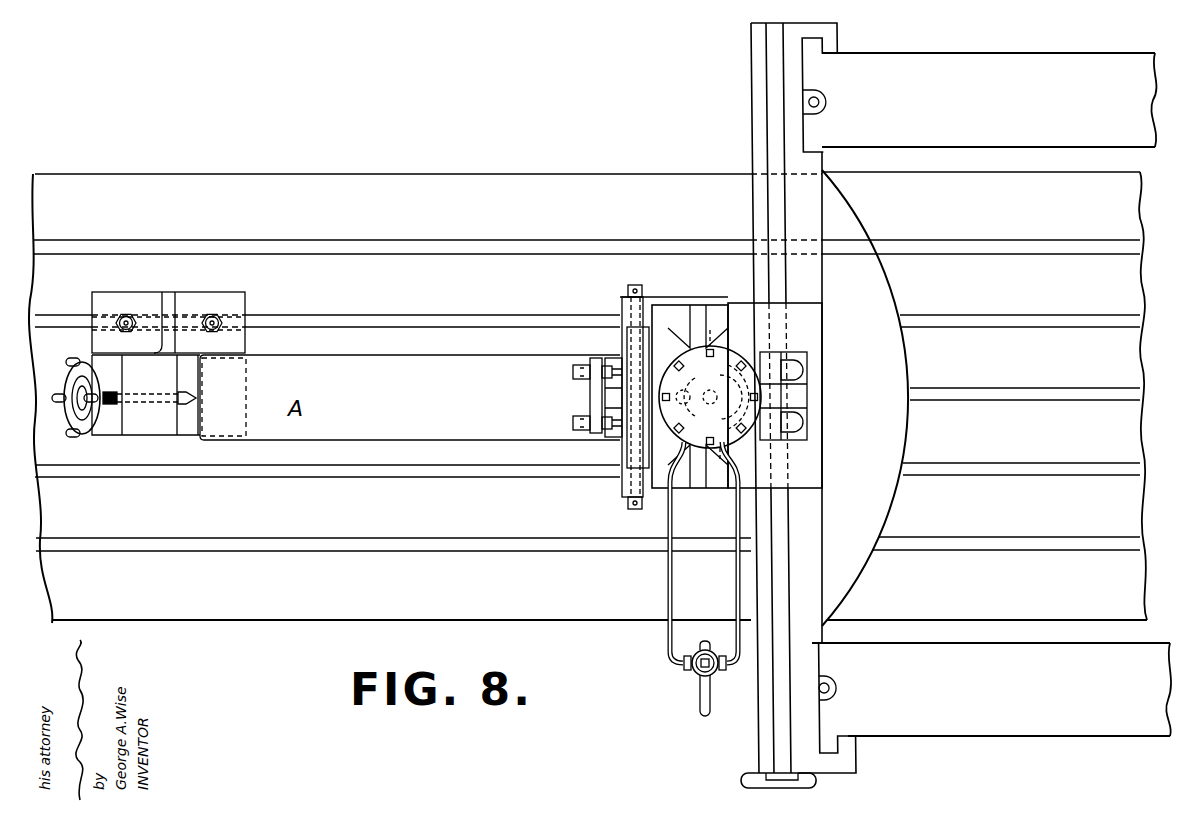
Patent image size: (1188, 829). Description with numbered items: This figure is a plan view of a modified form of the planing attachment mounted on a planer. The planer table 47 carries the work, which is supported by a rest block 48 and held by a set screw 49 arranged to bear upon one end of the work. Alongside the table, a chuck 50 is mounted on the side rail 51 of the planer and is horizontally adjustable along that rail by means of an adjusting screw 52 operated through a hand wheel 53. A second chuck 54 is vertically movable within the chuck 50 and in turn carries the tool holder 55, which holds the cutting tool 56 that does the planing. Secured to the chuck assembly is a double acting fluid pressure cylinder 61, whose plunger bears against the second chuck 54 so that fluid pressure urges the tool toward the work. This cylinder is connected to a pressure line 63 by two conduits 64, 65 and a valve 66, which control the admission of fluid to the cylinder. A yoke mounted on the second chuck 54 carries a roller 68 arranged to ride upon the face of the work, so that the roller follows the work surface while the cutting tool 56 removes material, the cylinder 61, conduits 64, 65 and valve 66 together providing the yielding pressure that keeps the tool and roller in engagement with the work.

The planer table 47 is at (280, 612).
The rest block 48 is at (190, 300).
The set screw 49 is at (107, 402).
The chuck 50 is at (794, 409).
The side rail 51 is at (865, 397).
The adjusting screw 52 is at (818, 102).
The hand wheel 53 is at (808, 780).
The second chuck 54 is at (707, 316).
The tool holder 55 is at (662, 316).
The cutting tool 56 is at (598, 403).
The double acting fluid pressure cylinder 61 is at (710, 397).
The pressure line 63 is at (708, 647).
The conduit 64 is at (738, 668).
The conduit 65 is at (668, 656).
The valve 66 is at (690, 672).
The roller 68 is at (622, 436).